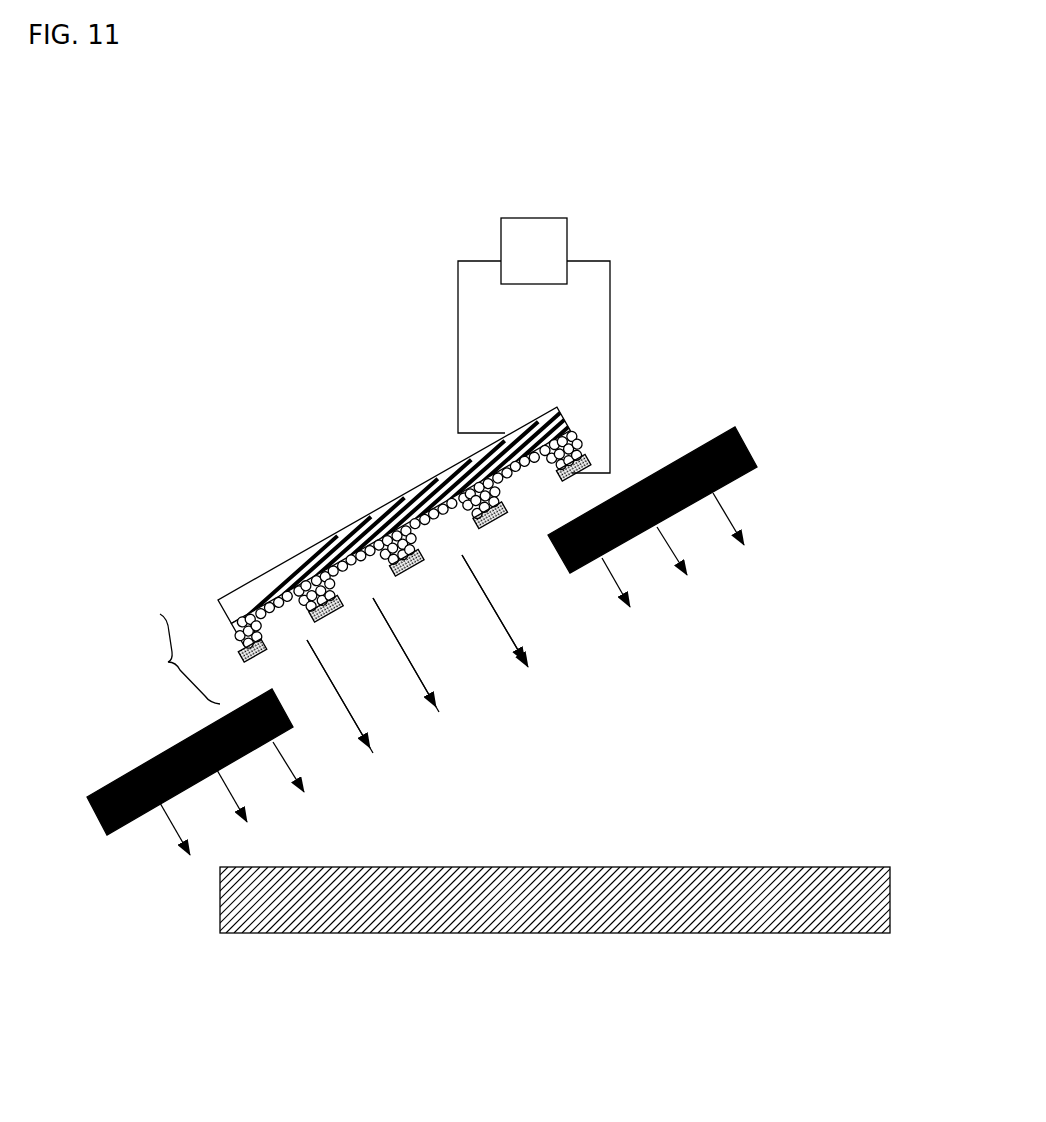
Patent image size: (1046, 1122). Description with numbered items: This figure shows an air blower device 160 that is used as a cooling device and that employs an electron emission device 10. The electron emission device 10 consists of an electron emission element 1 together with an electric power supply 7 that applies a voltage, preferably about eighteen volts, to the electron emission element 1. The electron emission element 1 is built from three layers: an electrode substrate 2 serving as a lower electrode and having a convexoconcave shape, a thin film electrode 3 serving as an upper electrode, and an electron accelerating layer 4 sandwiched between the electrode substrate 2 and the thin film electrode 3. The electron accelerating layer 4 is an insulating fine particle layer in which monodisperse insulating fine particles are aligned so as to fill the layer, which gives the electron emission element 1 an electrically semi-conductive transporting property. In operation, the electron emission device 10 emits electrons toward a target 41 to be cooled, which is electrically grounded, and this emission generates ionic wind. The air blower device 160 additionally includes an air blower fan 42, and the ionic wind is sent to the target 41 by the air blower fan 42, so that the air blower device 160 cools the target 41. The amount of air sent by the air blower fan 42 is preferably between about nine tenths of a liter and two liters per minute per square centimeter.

The air blower device 160 is at (826, 423).
The electric power supply 7 is at (533, 220).
The electron emission device 10 is at (412, 448).
The electron emission element 1 is at (186, 659).
The electrode substrate 2 is at (215, 605).
The thin film electrode 3 is at (244, 658).
The electron accelerating layer 4 is at (232, 645).
The air blower fan 42 is at (747, 440).
The target 41 is at (553, 933).